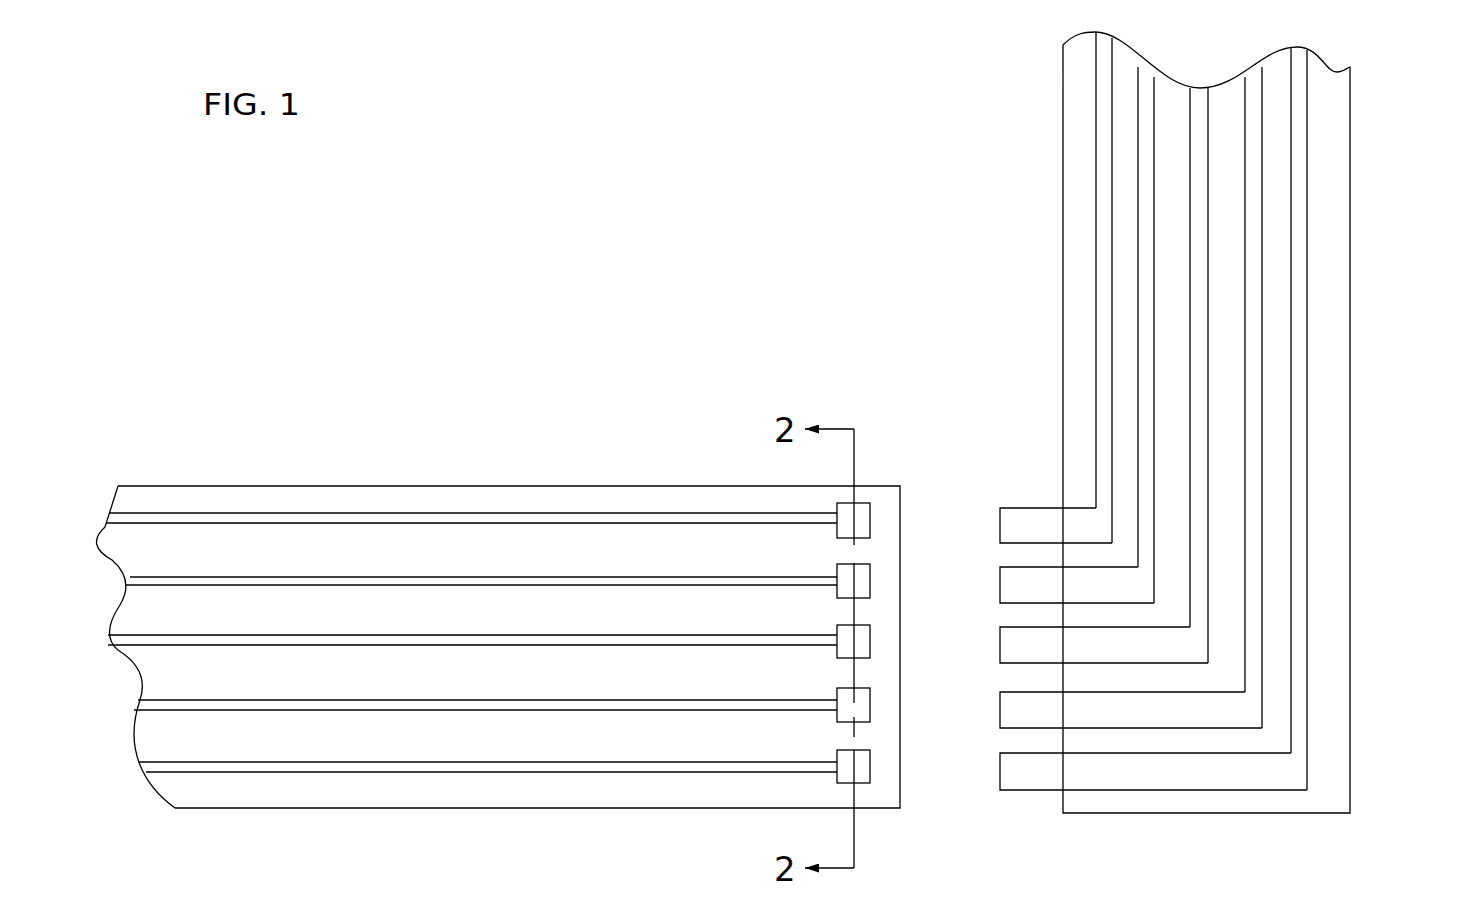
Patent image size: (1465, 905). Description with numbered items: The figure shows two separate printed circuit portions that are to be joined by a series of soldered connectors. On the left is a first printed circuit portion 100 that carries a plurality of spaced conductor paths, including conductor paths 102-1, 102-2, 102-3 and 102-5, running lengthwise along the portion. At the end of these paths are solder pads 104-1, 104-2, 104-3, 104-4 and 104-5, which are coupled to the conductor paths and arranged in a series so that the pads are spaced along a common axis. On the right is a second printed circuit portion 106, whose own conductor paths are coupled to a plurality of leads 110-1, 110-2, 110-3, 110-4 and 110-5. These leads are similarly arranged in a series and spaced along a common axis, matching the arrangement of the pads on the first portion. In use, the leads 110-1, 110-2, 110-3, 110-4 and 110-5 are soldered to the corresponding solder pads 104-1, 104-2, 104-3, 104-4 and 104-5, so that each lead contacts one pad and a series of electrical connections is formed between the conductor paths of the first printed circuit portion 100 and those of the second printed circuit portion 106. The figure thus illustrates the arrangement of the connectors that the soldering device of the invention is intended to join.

The first printed circuit portion 100 is at (548, 485).
The conductor path 102-1 is at (264, 512).
The conductor path 102-2 is at (288, 575).
The conductor path 102-3 is at (325, 634).
The conductor path 102-5 is at (286, 773).
The solder pad 104-1 is at (836, 538).
The solder pad 104-2 is at (836, 598).
The solder pad 104-3 is at (836, 658).
The solder pad 104-4 is at (836, 722).
The solder pad 104-5 is at (836, 783).
The second printed circuit portion 106 is at (1358, 208).
The lead 110-1 is at (1000, 523).
The lead 110-2 is at (1000, 585).
The lead 110-3 is at (1000, 645).
The lead 110-4 is at (1000, 708).
The lead 110-5 is at (1000, 772).